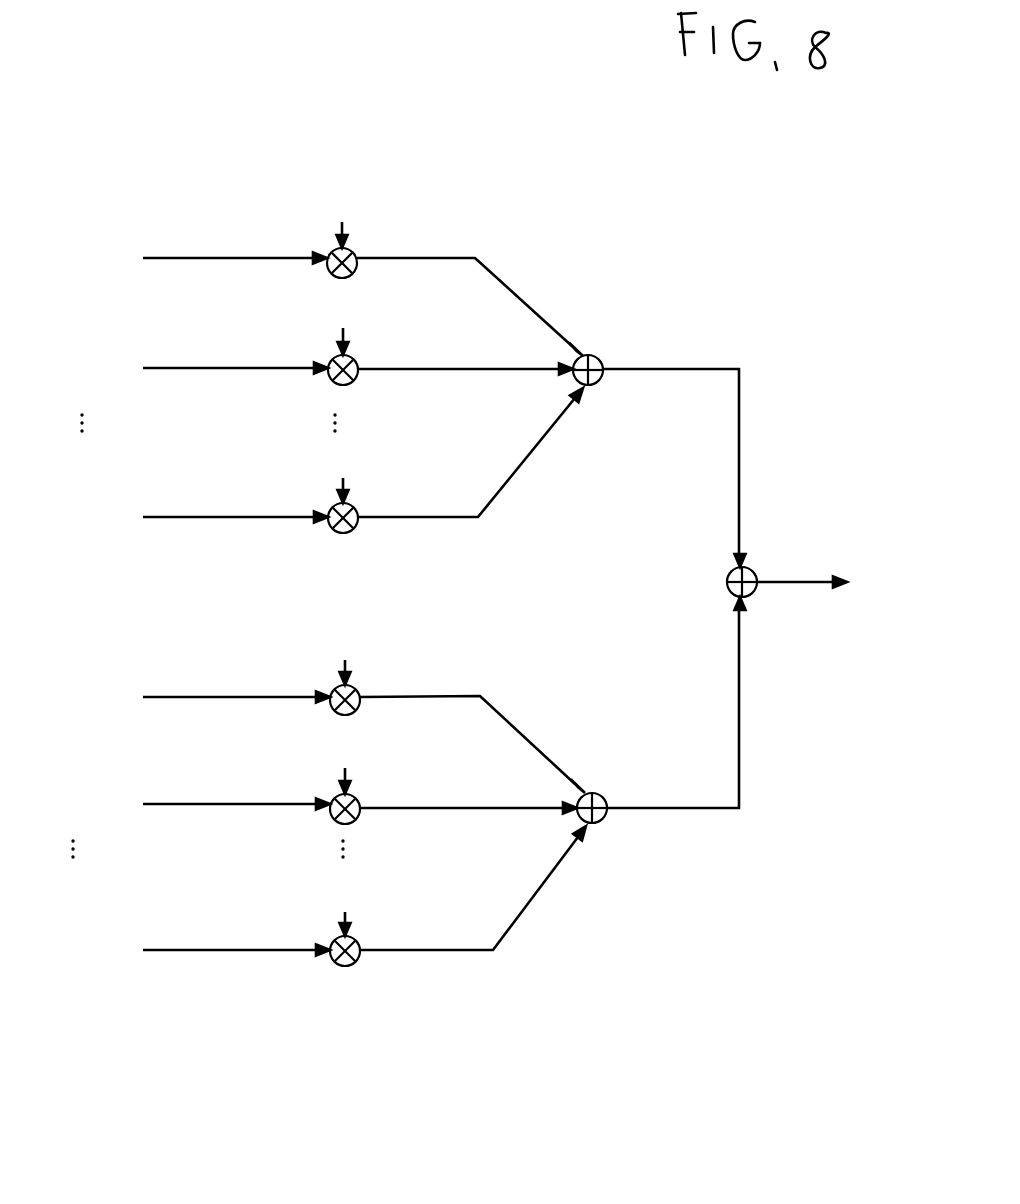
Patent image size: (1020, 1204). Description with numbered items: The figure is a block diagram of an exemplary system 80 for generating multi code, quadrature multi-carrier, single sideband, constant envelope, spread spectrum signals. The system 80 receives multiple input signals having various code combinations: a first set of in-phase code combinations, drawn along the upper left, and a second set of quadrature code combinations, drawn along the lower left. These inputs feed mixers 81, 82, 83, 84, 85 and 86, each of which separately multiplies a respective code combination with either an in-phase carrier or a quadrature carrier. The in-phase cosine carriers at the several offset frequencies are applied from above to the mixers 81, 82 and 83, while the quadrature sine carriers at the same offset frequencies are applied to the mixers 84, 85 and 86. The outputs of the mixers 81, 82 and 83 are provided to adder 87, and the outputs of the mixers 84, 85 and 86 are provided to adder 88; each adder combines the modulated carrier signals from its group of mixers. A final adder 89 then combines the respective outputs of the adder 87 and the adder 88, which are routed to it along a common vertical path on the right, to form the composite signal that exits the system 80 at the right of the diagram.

The system 80 is at (812, 247).
The mixer 81 is at (428, 222).
The mixer 82 is at (425, 415).
The mixer 83 is at (438, 581).
The mixer 84 is at (437, 673).
The mixer 85 is at (430, 845).
The mixer 86 is at (402, 1022).
The adder 87 is at (615, 427).
The adder 88 is at (612, 742).
The final adder 89 is at (791, 521).